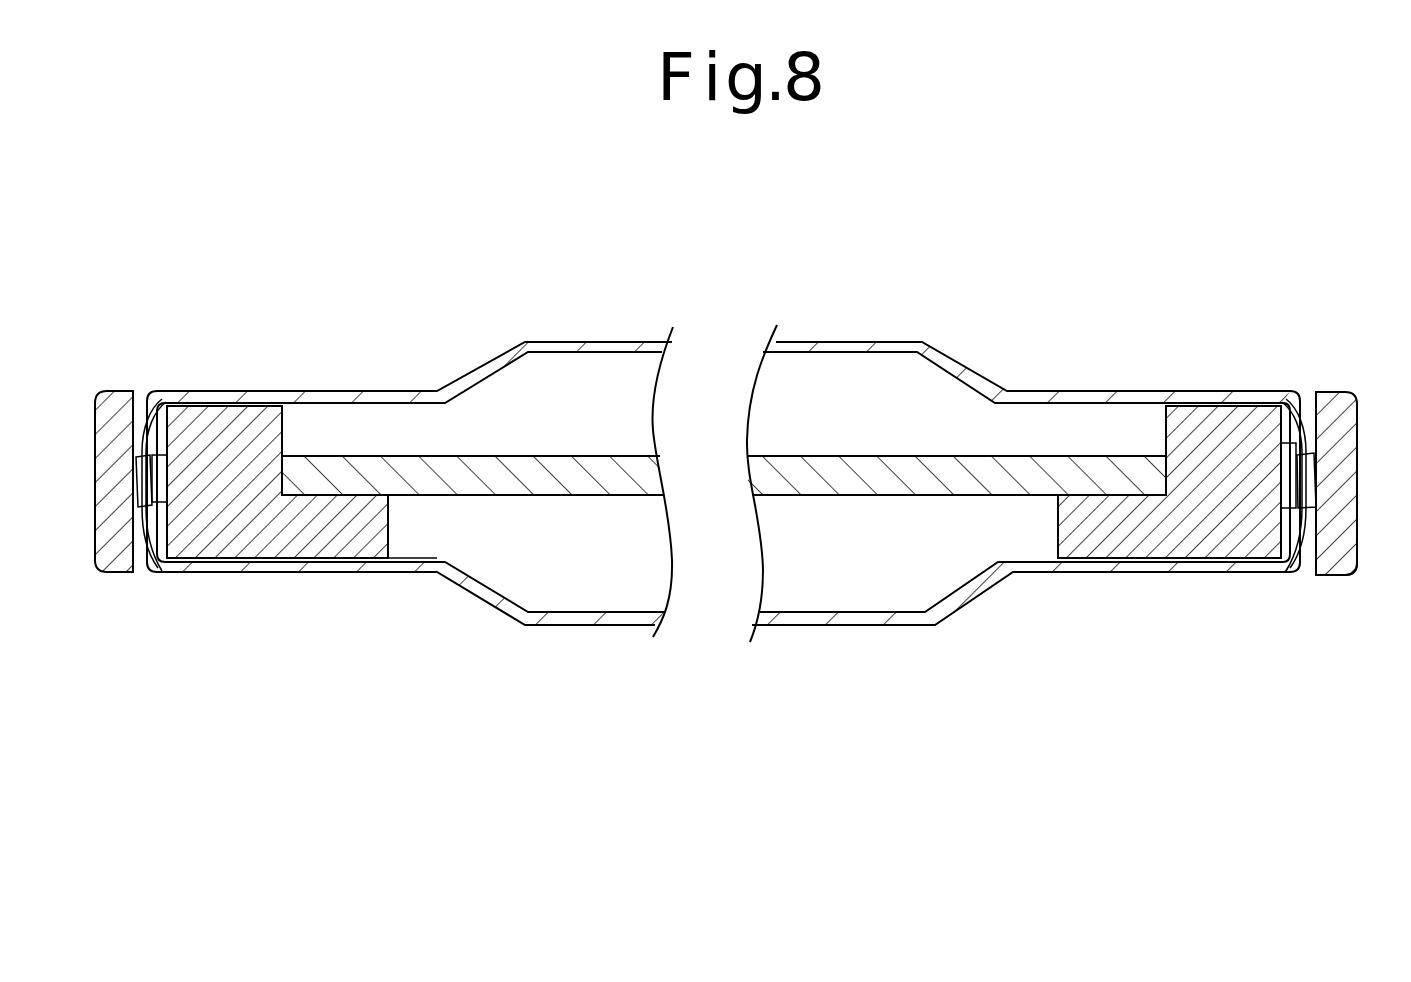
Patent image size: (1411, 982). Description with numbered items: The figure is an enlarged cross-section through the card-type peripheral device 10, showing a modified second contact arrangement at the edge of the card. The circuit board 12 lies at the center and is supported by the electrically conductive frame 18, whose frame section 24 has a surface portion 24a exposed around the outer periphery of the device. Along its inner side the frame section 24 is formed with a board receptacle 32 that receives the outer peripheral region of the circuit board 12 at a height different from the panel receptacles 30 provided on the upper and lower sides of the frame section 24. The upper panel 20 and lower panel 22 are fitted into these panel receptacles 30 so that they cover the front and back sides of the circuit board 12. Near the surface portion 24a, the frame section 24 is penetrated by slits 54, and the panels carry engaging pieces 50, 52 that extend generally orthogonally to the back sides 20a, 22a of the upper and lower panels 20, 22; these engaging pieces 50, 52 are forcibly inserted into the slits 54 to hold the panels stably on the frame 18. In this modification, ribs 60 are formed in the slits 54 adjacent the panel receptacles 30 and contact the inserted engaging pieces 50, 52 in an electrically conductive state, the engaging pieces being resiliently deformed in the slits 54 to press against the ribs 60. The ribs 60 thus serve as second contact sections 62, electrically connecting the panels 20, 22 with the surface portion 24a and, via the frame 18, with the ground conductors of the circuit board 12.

The card-type peripheral device 10 is at (430, 290).
The circuit board 12 is at (601, 444).
The frame 18 is at (269, 572).
The upper panel 20 is at (880, 341).
The back side of upper panel 20a is at (336, 408).
The lower panel 22 is at (883, 627).
The back side of lower panel 22a is at (1036, 565).
The frame section 24 is at (1358, 455).
The surface portion 24a is at (1358, 498).
The panel receptacle 30 is at (245, 404).
The board receptacle 32 is at (342, 488).
The engaging piece 50 is at (146, 420).
The engaging piece 52 is at (130, 566).
The slit 54 is at (158, 424).
The rib 60 is at (150, 573).
The second contact section 62 is at (149, 588).